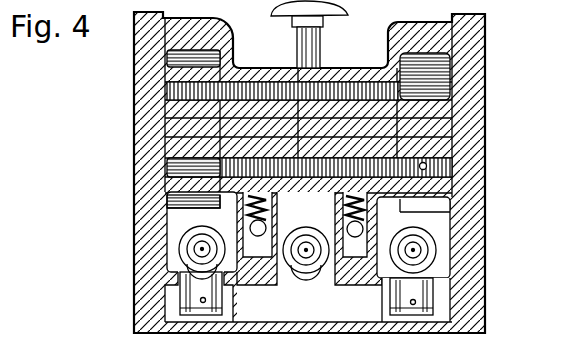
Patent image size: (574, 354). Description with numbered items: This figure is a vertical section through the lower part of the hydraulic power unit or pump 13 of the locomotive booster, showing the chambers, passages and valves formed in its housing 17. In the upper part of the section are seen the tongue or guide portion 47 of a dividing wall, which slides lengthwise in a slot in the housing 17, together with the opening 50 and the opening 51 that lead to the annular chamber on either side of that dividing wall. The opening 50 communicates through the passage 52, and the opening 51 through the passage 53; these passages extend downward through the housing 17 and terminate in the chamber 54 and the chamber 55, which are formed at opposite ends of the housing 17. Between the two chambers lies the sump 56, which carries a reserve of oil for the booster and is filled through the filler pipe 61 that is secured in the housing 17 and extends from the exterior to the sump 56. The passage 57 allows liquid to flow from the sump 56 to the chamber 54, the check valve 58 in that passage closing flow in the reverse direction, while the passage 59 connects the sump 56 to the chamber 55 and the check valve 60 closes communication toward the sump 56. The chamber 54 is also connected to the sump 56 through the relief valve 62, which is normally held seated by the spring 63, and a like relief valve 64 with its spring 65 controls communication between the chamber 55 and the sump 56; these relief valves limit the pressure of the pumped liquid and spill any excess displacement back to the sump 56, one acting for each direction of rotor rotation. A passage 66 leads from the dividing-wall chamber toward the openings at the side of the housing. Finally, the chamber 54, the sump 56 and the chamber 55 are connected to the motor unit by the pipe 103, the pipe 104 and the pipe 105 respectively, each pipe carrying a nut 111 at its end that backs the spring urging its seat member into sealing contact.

The hydraulic power unit or pump 13 is at (485, 26).
The housing 17 is at (257, 70).
The tongue or guide portion 47 is at (455, 118).
The opening 50 is at (308, 165).
The opening 51 is at (167, 91).
The passage 52 is at (190, 60).
The passage 53 is at (437, 66).
The chamber 54 is at (178, 215).
The chamber 55 is at (436, 253).
The sump 56 is at (310, 316).
The passage 57 is at (193, 288).
The check valve 58 is at (207, 318).
The passage 59 is at (433, 285).
The check valve 60 is at (415, 317).
The filler pipe 61 is at (321, 58).
The relief valve 62 is at (267, 218).
The spring 63 is at (240, 207).
The relief valve 64 is at (345, 228).
The spring 65 is at (368, 218).
The passage 66 is at (427, 167).
The pipe 103 is at (182, 249).
The pipe 104 is at (313, 273).
The pipe 105 is at (427, 243).
The nut 111 is at (180, 263).